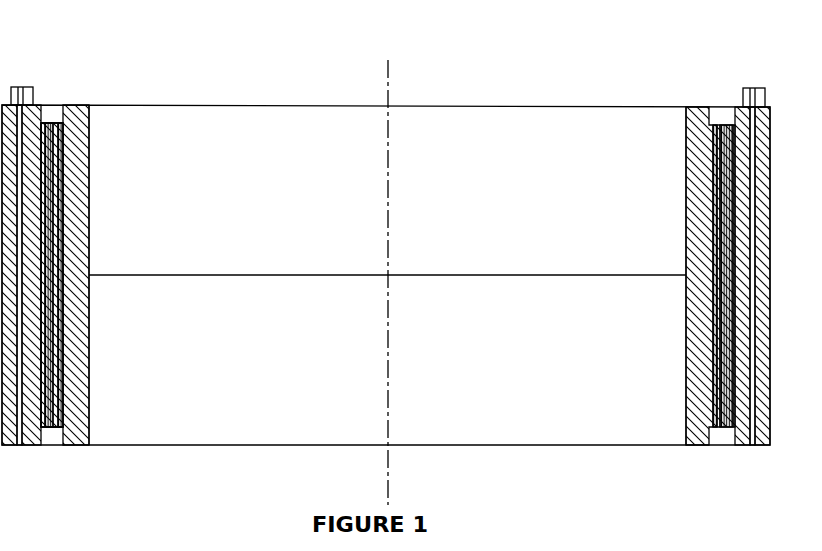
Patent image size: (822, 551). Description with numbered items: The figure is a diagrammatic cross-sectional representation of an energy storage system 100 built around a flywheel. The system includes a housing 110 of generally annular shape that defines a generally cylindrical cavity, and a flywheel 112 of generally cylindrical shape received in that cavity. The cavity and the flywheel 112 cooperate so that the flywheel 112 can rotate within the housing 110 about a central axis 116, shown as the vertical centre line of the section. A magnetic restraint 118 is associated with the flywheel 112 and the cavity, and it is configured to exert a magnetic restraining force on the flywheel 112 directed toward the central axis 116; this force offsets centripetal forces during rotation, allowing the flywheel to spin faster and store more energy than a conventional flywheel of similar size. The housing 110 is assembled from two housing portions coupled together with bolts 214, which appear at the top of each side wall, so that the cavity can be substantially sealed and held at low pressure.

The energy storage system 100 is at (498, 104).
The housing 110 is at (75, 106).
The flywheel 112 is at (67, 424).
The central axis 116 is at (391, 216).
The magnetic restraint 118 is at (43, 220).
The bolts 214 is at (25, 87).